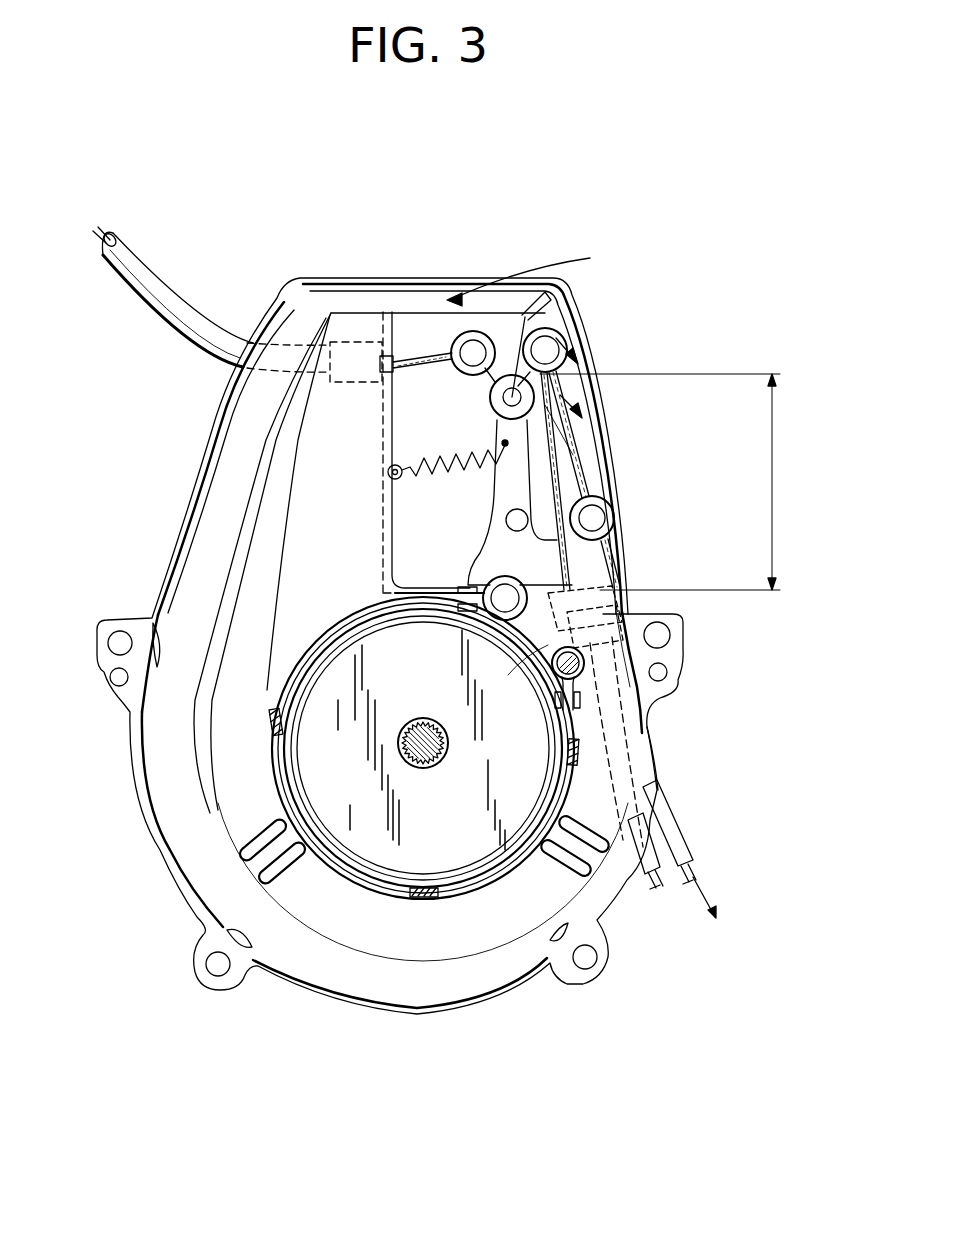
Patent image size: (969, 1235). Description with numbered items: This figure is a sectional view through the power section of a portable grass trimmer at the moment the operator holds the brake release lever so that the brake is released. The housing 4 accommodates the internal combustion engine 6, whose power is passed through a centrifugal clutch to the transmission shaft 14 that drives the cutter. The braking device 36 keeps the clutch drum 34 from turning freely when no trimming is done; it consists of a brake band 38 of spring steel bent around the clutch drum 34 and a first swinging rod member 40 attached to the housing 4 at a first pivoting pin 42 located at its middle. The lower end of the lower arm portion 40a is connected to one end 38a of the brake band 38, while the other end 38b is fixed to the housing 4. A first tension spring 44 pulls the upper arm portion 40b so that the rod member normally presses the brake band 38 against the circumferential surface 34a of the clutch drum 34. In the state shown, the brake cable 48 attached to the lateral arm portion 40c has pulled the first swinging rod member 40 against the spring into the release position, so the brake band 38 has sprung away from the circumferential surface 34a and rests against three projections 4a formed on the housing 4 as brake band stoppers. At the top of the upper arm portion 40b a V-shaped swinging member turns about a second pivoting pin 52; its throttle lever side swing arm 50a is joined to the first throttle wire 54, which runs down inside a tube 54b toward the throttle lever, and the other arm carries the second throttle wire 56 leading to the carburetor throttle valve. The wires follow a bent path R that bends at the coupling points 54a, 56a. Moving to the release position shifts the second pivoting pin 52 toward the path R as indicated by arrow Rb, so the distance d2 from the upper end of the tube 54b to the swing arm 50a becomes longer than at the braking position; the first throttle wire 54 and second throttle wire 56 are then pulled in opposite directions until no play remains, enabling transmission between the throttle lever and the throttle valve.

The housing 4 is at (280, 935).
The projections 4a is at (270, 722).
The internal combustion engine 6 is at (332, 268).
The transmission shaft 14 is at (418, 770).
The clutch drum 34 is at (645, 617).
The circumferential surface 34a is at (578, 707).
The braking device 36 is at (482, 895).
The brake band 38 is at (575, 730).
The one end of brake band 38a is at (573, 597).
The other end of brake band 38b is at (585, 677).
The first swinging rod member 40 is at (575, 455).
The lower arm portion 40a is at (500, 567).
The upper arm portion 40b is at (500, 430).
The lateral arm portion 40c is at (515, 520).
The first pivoting pin 42 is at (615, 515).
The first tension spring 44 is at (455, 462).
The brake cable 48 is at (610, 547).
The throttle lever side swing arm 50a is at (520, 313).
The second pivoting pin 52 is at (545, 305).
The first throttle wire 54 is at (520, 455).
The coupling point 54a is at (562, 343).
The tube 54b is at (642, 860).
The second throttle wire 56 is at (418, 352).
The coupling point 56a is at (458, 337).
The bent path R is at (527, 298).
The arrow Rb is at (607, 395).
The distance d2 is at (664, 482).